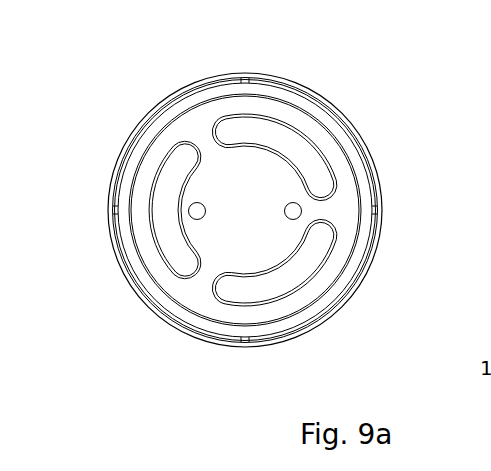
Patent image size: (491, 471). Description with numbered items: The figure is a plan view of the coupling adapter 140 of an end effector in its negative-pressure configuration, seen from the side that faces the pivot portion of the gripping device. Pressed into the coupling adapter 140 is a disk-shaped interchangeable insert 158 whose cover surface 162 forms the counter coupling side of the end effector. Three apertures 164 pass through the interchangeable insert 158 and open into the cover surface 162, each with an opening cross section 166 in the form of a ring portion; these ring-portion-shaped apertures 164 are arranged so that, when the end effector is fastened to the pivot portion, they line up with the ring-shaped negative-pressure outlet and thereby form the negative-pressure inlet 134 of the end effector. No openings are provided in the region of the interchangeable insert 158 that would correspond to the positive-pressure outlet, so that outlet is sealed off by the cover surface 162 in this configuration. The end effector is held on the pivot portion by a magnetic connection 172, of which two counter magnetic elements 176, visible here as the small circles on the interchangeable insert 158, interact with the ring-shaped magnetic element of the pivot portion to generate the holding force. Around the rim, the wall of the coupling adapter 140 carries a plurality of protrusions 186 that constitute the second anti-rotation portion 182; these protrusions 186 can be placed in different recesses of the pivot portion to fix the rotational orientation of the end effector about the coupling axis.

The coupling adapter 140 is at (142, 128).
The protrusions 186 is at (269, 219).
The second anti-rotation portion 182 is at (246, 85).
The cover surface 162 is at (245, 187).
The interchangeable insert 158 is at (197, 120).
The apertures 164 is at (290, 185).
The opening cross section 166 is at (290, 185).
The negative-pressure inlet 134 is at (289, 147).
The counter magnetic elements 176 is at (271, 250).
The magnetic connection 172 is at (298, 212).